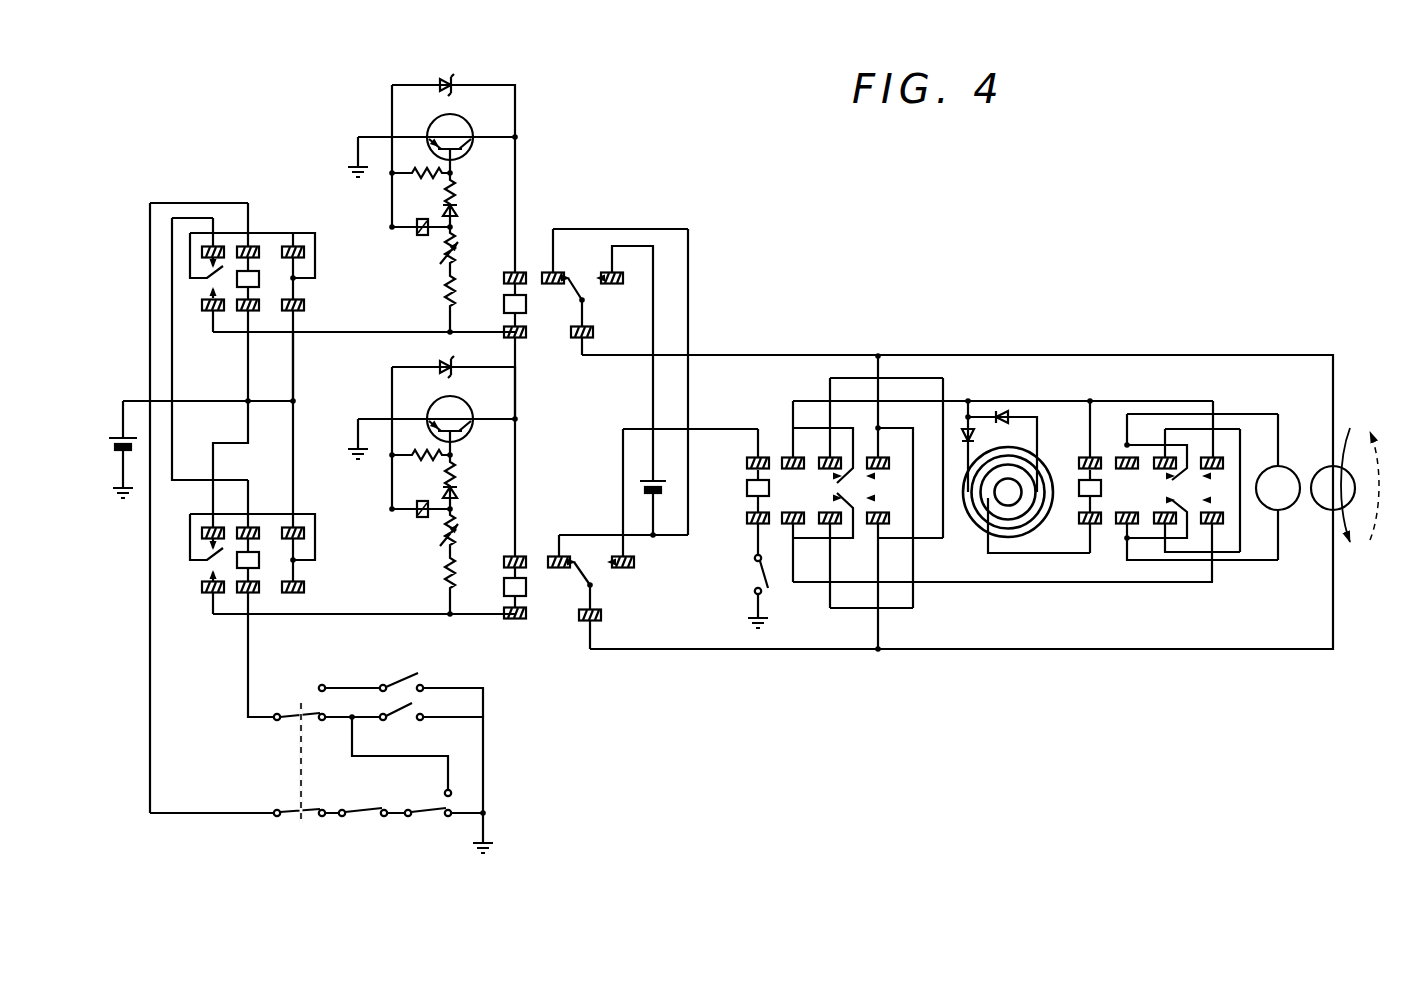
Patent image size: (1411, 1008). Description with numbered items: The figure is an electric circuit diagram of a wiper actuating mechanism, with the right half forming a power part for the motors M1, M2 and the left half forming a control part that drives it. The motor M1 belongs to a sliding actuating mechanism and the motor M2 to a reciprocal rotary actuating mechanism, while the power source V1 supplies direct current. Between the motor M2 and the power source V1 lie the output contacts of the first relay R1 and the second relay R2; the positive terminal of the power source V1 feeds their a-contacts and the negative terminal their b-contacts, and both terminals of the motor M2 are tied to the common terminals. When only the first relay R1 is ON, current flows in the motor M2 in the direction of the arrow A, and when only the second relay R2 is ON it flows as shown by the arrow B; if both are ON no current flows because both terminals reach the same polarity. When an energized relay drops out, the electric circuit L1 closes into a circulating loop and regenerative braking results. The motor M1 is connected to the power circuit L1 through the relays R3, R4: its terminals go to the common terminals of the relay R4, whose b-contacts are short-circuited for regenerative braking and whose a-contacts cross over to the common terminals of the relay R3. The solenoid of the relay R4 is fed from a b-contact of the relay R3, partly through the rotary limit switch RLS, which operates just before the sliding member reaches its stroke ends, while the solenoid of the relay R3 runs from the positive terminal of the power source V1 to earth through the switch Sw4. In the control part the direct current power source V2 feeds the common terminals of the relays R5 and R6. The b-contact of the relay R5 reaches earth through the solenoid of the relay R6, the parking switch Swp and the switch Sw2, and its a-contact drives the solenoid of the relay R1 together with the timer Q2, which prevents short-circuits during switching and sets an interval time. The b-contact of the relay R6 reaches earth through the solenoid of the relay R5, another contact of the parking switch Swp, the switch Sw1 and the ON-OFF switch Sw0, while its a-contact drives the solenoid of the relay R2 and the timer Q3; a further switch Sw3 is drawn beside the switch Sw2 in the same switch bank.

The timer Q2 is at (534, 122).
The timer Q3 is at (525, 404).
The first relay R1 is at (539, 227).
The second relay R2 is at (539, 529).
The relay R3 is at (957, 375).
The relay R4 is at (1166, 393).
The relay R5 is at (279, 226).
The relay R6 is at (306, 502).
The power source of direct current V1 is at (641, 470).
The direct current power source V2 is at (131, 466).
The electric circuit L1 is at (813, 355).
The parking switch Swp is at (291, 703).
The ON-OFF switch Sw0 is at (432, 820).
The switch Sw1 is at (370, 820).
The switch Sw2 is at (403, 702).
The switch Sw3 is at (395, 682).
The switch Sw4 is at (743, 592).
The rotary limit switch RLS is at (1020, 545).
The motor M1 is at (1278, 487).
The motor M2 is at (1333, 488).
The arrow A is at (1349, 505).
The arrow B is at (1368, 470).